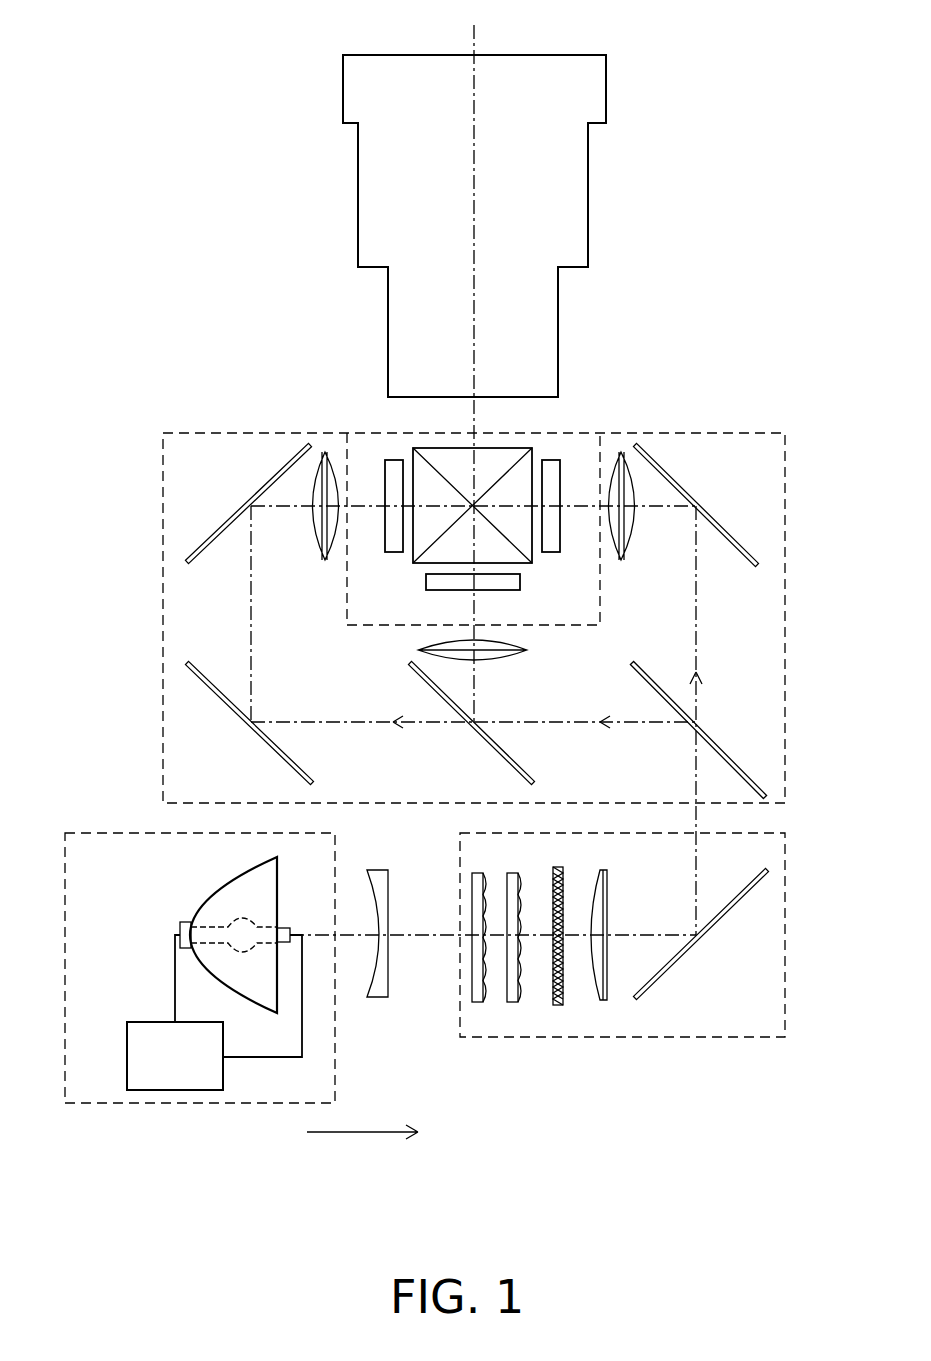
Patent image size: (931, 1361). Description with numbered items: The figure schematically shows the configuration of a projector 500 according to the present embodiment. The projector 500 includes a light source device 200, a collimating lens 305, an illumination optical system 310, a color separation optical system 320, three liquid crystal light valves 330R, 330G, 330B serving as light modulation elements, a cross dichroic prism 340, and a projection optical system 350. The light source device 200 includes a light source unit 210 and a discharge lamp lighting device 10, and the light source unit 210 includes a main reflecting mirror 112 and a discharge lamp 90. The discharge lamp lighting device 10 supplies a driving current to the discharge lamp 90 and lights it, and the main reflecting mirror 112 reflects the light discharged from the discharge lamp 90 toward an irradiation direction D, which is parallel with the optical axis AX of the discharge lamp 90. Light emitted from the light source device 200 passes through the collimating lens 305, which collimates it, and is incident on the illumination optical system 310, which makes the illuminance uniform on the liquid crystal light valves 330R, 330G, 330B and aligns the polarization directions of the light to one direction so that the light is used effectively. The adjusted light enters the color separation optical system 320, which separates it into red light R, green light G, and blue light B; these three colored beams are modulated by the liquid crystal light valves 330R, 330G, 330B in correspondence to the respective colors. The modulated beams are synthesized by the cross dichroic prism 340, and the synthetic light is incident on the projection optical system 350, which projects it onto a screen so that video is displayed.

The projector 500 is at (688, 37).
The projection optical system 350 is at (588, 229).
The cross dichroic prism 340 is at (458, 448).
The liquid crystal light valve 330R is at (548, 460).
The liquid crystal light valve 330G is at (503, 590).
The liquid crystal light valve 330B is at (394, 552).
The color separation optical system 320 is at (785, 783).
The illumination optical system 310 is at (785, 993).
The collimating lens 305 is at (378, 997).
The light source device 200 is at (165, 1105).
The light source unit 210 is at (168, 902).
The main reflecting mirror 112 is at (206, 897).
The discharge lamp 90 is at (285, 928).
The discharge lamp lighting device 10 is at (127, 1063).
The optical axis AX is at (433, 937).
The red light R is at (697, 636).
The green light G is at (475, 678).
The blue light B is at (250, 638).
The irradiation direction D is at (375, 1131).